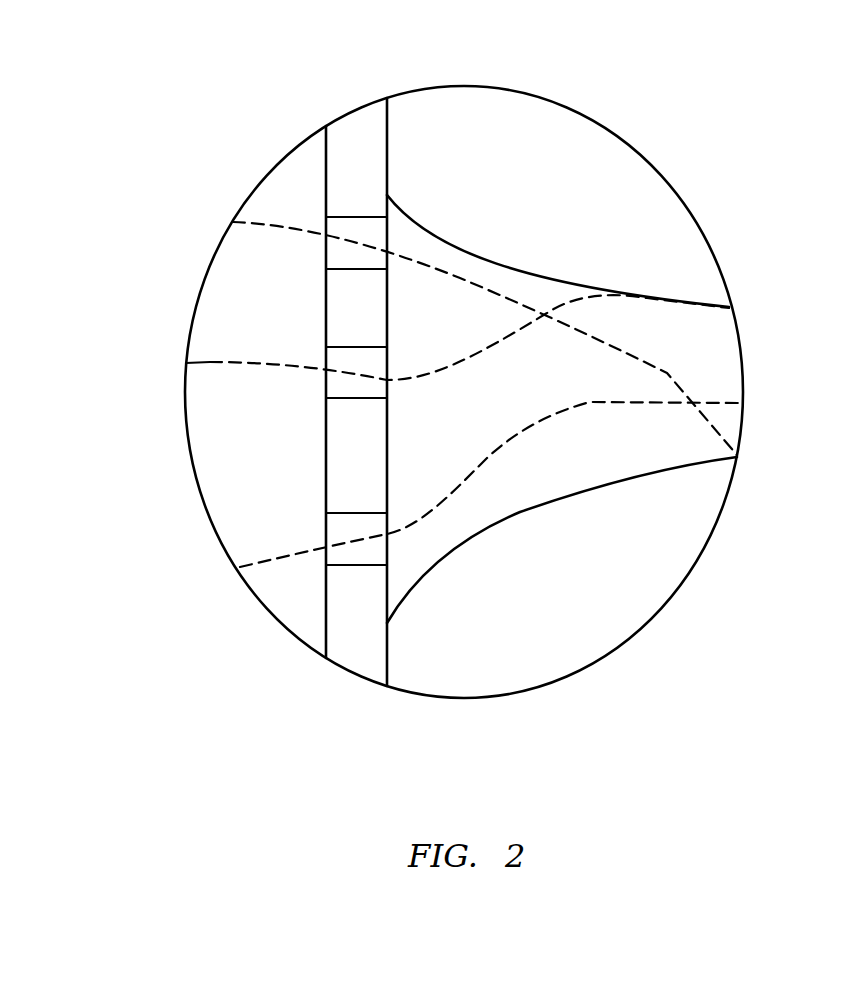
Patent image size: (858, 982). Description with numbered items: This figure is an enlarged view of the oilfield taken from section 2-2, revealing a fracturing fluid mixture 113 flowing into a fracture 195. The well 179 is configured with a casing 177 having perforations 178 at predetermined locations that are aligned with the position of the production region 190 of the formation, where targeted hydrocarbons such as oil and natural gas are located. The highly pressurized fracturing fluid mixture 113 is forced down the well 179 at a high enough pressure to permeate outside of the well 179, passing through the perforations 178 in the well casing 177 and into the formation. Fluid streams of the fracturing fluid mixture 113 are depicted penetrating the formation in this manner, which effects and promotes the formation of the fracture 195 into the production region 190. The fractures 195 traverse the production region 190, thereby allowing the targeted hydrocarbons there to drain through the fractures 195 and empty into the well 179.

The fracturing fluid mixture 113 is at (200, 363).
The well casing 177 is at (368, 132).
The perforations 178 is at (337, 362).
The well 179 is at (290, 175).
The production region 190 is at (550, 208).
The fracture 195 is at (647, 448).
The section 2-2 is at (740, 342).